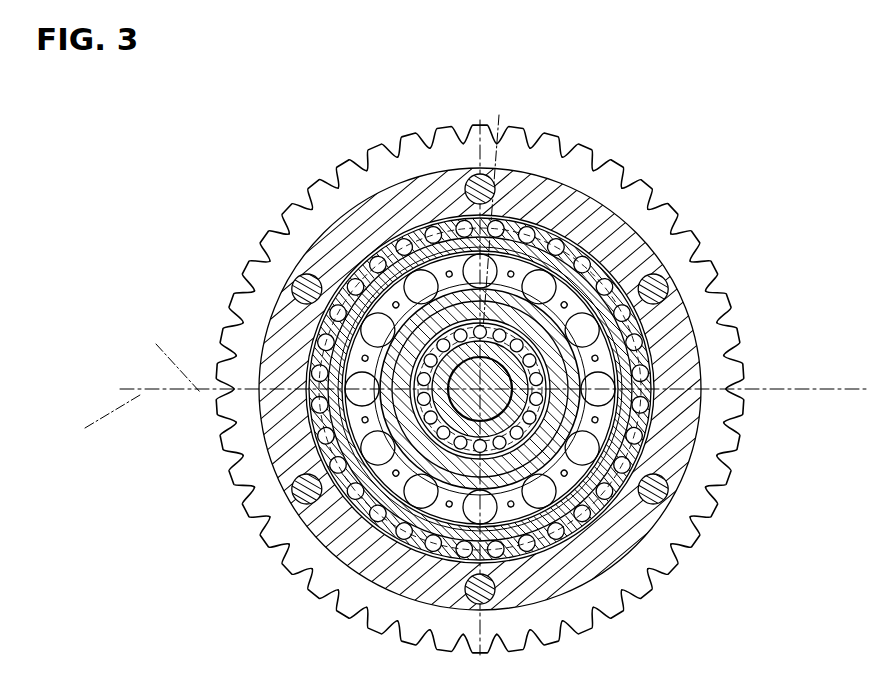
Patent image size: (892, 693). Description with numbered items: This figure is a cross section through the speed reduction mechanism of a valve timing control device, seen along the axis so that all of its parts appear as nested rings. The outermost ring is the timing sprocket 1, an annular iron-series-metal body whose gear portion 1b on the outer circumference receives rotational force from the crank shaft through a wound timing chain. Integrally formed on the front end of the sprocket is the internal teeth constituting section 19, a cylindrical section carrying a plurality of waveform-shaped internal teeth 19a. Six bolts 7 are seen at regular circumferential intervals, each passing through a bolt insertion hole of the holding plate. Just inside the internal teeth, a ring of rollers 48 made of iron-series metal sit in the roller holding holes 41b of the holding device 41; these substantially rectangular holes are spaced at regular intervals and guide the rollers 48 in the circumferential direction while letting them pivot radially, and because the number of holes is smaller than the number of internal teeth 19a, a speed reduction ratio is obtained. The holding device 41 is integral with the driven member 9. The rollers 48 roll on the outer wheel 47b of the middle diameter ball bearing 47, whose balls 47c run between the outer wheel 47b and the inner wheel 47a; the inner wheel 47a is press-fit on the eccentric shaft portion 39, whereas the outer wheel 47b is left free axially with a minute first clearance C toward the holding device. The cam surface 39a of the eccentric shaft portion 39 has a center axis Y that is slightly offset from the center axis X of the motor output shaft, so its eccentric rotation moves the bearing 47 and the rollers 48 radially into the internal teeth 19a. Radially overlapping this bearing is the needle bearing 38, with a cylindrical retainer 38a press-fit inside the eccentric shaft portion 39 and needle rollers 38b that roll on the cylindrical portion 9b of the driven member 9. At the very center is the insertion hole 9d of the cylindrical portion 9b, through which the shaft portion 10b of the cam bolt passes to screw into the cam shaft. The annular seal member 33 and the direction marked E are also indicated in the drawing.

The timing sprocket 1 is at (724, 252).
The gear portion 1b is at (668, 208).
The bolt 7 is at (478, 173).
The driven member 9 is at (300, 447).
The cylindrical portion 9b is at (330, 505).
The insertion hole 9d is at (300, 280).
The shaft portion 10b is at (405, 548).
The internal teeth constituting section 19 is at (688, 440).
The internal teeth 19a is at (520, 228).
The annular seal member 33 is at (700, 410).
The needle bearing 38 is at (520, 470).
The cylindrical retainer 38a is at (476, 462).
The needle rollers 38b is at (448, 510).
The eccentric shaft portion 39 is at (745, 240).
The cam surface 39a is at (650, 565).
The holding device 41 is at (628, 215).
The roller holding holes 41b is at (399, 248).
The middle diameter ball bearing 47 is at (325, 422).
The inner wheel 47a is at (660, 540).
The outer wheel 47b is at (700, 470).
The balls 47c is at (663, 300).
The rollers 48 is at (578, 245).
The first clearance C is at (267, 262).
The eccentric direction E is at (492, 212).
The center axis of the motor output shaft X is at (100, 421).
The center axis of the cam surface Y is at (171, 357).